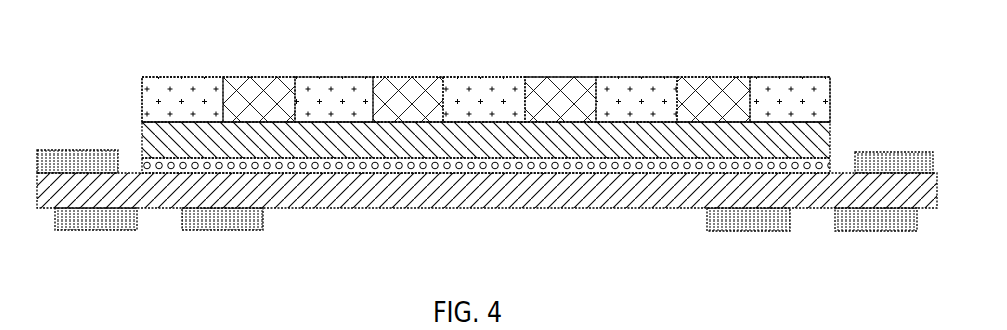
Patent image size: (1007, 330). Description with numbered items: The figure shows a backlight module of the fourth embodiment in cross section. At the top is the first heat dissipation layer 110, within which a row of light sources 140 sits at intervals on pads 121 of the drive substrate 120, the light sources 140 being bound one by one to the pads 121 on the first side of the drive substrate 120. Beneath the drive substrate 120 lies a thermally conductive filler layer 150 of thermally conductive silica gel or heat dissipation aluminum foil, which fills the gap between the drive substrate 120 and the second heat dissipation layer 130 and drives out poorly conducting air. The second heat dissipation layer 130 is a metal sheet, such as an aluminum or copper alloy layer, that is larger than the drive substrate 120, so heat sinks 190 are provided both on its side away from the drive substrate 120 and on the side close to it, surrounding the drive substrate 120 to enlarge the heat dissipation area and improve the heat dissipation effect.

The first heat dissipation layer 110 is at (337, 75).
The pads 121 is at (515, 83).
The light source 140 is at (260, 75).
The drive substrate 120 is at (366, 157).
The thermally conductive filler layer 150 is at (299, 176).
The second heat dissipation layer 130 is at (425, 209).
The heat sinks 190 is at (752, 231).